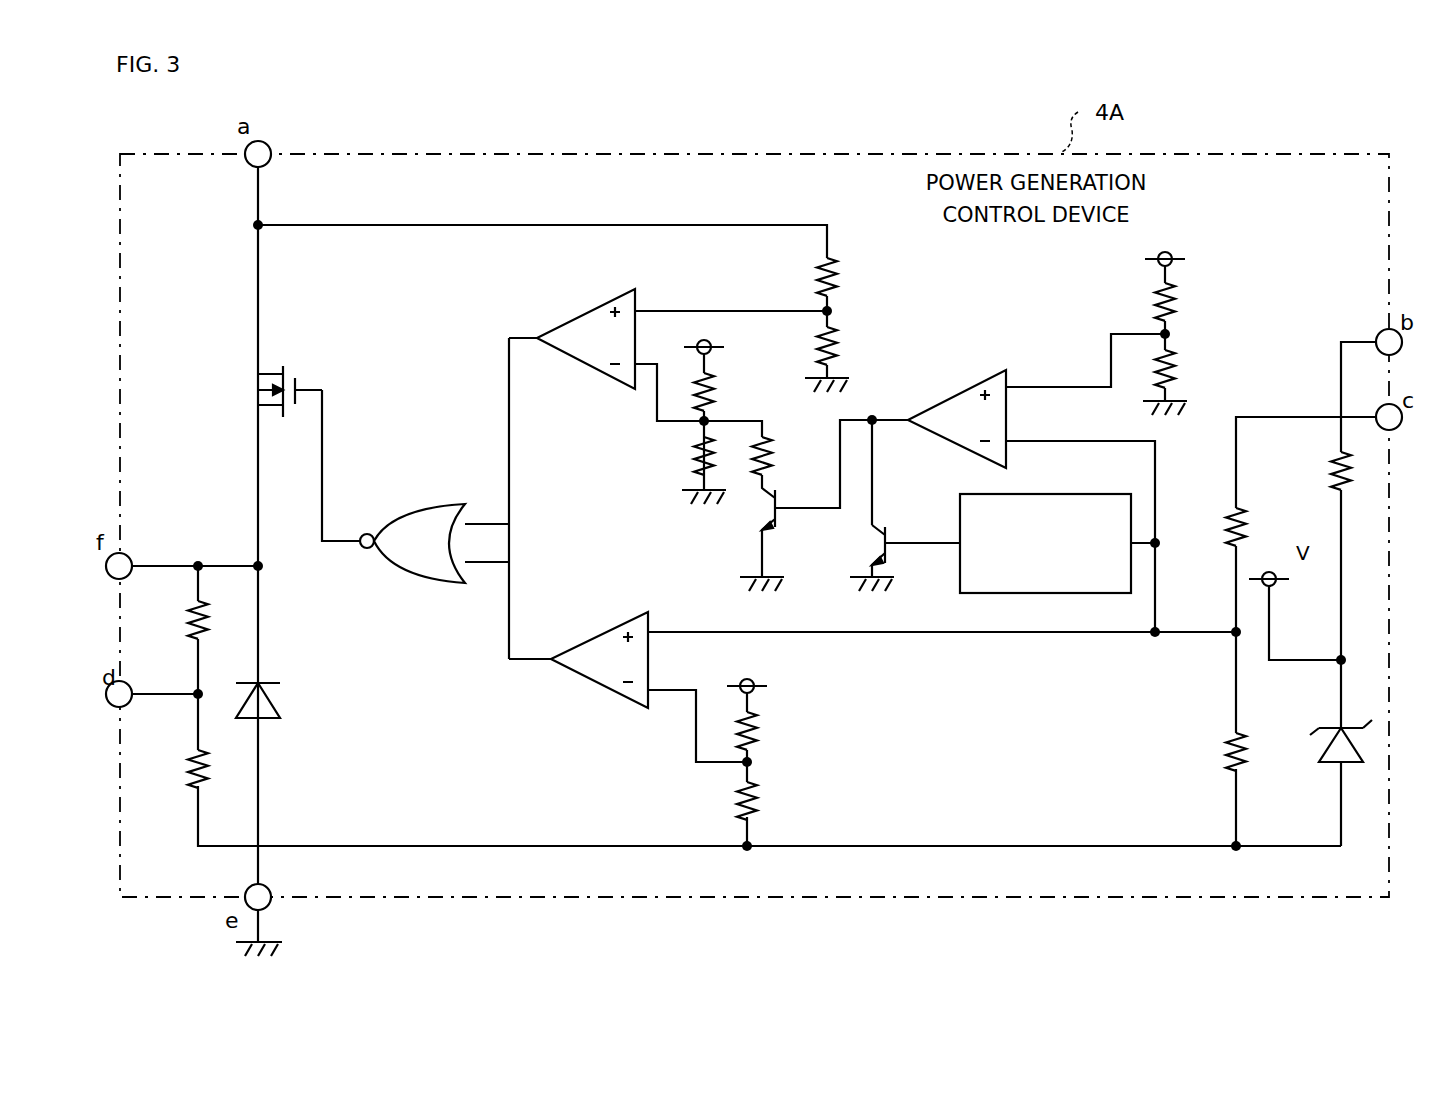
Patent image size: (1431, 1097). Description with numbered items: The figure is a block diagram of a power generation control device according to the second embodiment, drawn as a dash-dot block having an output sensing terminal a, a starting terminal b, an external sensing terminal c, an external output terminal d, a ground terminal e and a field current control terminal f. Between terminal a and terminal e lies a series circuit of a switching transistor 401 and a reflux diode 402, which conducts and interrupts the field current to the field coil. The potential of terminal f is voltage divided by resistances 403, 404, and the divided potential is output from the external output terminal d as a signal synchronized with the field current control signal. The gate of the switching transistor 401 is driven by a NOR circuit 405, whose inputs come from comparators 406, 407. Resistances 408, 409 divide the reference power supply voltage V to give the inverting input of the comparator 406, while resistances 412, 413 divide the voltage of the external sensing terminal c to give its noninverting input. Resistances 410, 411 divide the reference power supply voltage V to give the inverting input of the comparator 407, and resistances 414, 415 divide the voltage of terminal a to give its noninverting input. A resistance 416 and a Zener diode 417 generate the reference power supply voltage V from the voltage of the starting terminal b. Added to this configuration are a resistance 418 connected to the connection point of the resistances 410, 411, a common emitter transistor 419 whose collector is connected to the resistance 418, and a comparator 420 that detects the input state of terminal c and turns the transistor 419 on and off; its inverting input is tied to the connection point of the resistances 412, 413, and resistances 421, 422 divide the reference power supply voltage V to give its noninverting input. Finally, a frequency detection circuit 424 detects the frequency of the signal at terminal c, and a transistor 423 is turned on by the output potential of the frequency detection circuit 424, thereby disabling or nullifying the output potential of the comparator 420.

The switching transistor 401 is at (297, 378).
The reflux diode 402 is at (276, 714).
The resistance 403 is at (179, 617).
The resistance 404 is at (179, 765).
The NOR circuit 405 is at (418, 504).
The comparator 406 is at (610, 632).
The comparator 407 is at (584, 314).
The resistance 408 is at (765, 732).
The resistance 409 is at (765, 793).
The resistance 410 is at (715, 395).
The resistance 411 is at (683, 454).
The resistance 412 is at (1218, 525).
The resistance 413 is at (1215, 740).
The resistance 414 is at (850, 286).
The resistance 415 is at (850, 343).
The resistance 416 is at (1323, 464).
The Zener diode 417 is at (1312, 753).
The resistance 418 is at (776, 460).
The transistor 419 is at (759, 510).
The comparator 420 is at (962, 392).
The resistance 421 is at (1186, 302).
The resistance 422 is at (1184, 359).
The transistor 423 is at (886, 528).
The frequency detection circuit 424 is at (1050, 494).